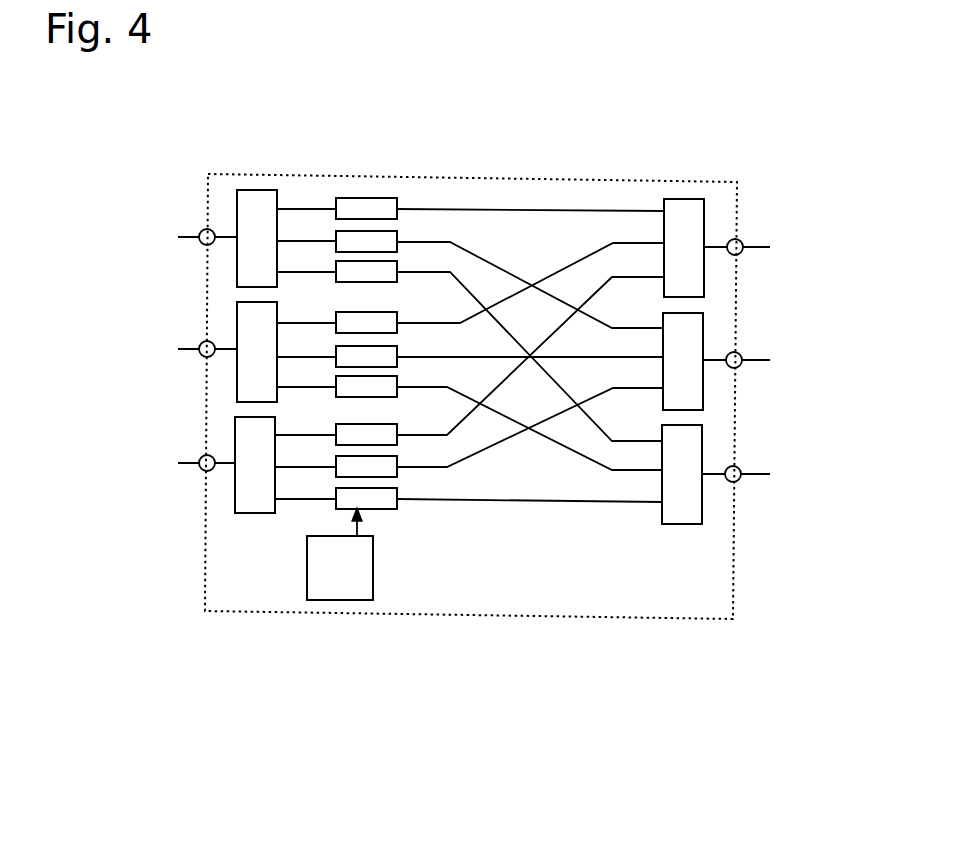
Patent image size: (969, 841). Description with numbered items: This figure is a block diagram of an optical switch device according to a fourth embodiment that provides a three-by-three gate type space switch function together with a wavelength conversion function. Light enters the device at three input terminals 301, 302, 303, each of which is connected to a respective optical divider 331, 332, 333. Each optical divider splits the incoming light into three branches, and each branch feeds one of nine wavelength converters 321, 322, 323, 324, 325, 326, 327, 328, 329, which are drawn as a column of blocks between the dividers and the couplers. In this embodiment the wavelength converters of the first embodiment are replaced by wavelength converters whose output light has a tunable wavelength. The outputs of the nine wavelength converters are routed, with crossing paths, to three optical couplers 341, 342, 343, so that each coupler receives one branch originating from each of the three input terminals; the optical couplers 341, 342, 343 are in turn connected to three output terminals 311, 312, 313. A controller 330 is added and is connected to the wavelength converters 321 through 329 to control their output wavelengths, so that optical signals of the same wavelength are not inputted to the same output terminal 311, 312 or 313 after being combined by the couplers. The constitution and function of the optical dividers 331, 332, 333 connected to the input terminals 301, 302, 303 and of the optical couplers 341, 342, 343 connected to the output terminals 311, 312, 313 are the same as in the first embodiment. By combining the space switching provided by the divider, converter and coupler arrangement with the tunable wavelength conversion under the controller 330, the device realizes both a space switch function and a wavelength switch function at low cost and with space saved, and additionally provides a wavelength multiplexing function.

The input terminal 301 is at (200, 230).
The input terminal 302 is at (200, 343).
The input terminal 303 is at (200, 457).
The output terminal 311 is at (737, 240).
The output terminal 312 is at (736, 353).
The output terminal 313 is at (735, 466).
The wavelength converter 321 is at (385, 199).
The wavelength converter 322 is at (398, 232).
The wavelength converter 323 is at (398, 265).
The wavelength converter 324 is at (398, 315).
The wavelength converter 325 is at (398, 347).
The wavelength converter 326 is at (397, 395).
The wavelength converter 327 is at (397, 443).
The wavelength converter 328 is at (397, 477).
The wavelength converter 329 is at (397, 508).
The controller 330 is at (338, 600).
The optical divider 331 is at (237, 213).
The optical divider 332 is at (237, 325).
The optical divider 333 is at (235, 437).
The optical coupler 341 is at (705, 219).
The optical coupler 342 is at (705, 332).
The optical coupler 343 is at (702, 447).